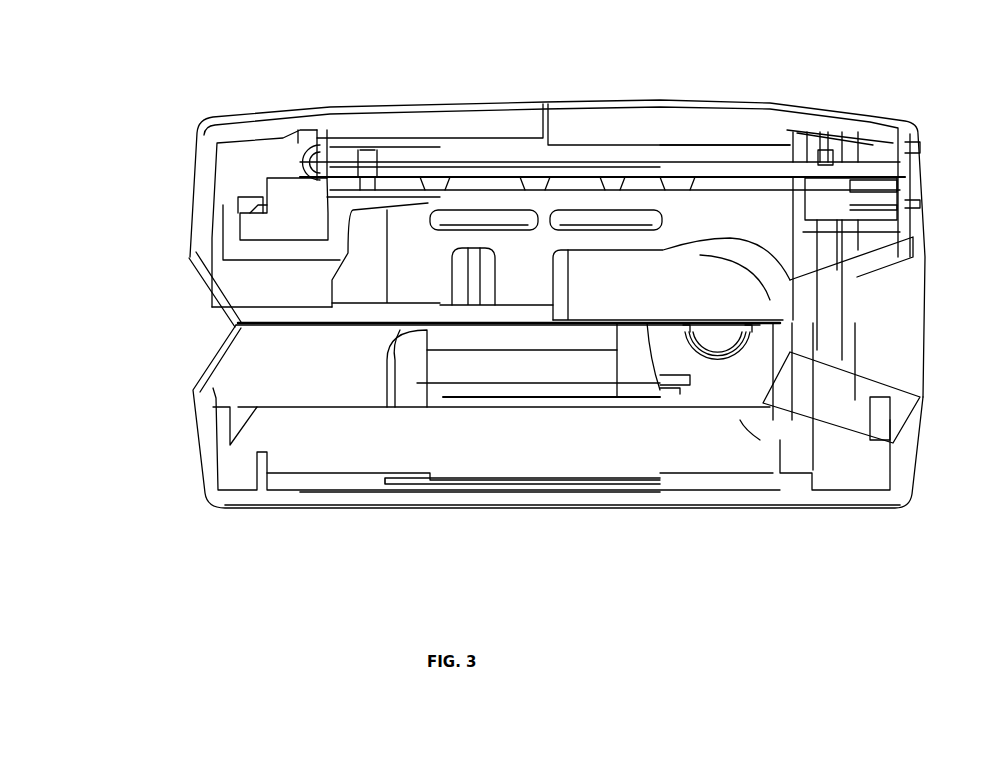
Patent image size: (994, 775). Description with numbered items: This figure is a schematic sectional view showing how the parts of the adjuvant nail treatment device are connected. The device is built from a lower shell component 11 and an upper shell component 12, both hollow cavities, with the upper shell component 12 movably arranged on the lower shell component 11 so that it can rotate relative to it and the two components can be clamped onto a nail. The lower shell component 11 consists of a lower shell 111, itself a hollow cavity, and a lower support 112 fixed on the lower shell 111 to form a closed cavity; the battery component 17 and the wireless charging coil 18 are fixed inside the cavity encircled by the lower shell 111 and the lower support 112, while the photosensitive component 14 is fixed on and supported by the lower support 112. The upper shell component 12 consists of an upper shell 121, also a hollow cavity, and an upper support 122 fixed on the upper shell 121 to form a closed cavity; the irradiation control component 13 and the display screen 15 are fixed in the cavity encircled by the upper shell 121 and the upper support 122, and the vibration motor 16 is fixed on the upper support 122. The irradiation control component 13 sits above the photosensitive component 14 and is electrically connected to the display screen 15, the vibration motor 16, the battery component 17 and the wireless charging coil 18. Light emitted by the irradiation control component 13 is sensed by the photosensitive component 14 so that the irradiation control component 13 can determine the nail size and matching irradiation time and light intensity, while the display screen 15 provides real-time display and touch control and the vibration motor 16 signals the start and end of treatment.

The lower shell component 11 is at (70, 291).
The lower shell 111 is at (204, 438).
The lower support 112 is at (224, 390).
The upper shell component 12 is at (71, 137).
The upper shell 121 is at (200, 217).
The upper support 122 is at (207, 246).
The irradiation control component 13 is at (670, 165).
The photosensitive component 14 is at (660, 398).
The display screen 15 is at (370, 123).
The vibration motor 16 is at (283, 217).
The battery component 17 is at (470, 452).
The wireless charging coil 18 is at (472, 497).